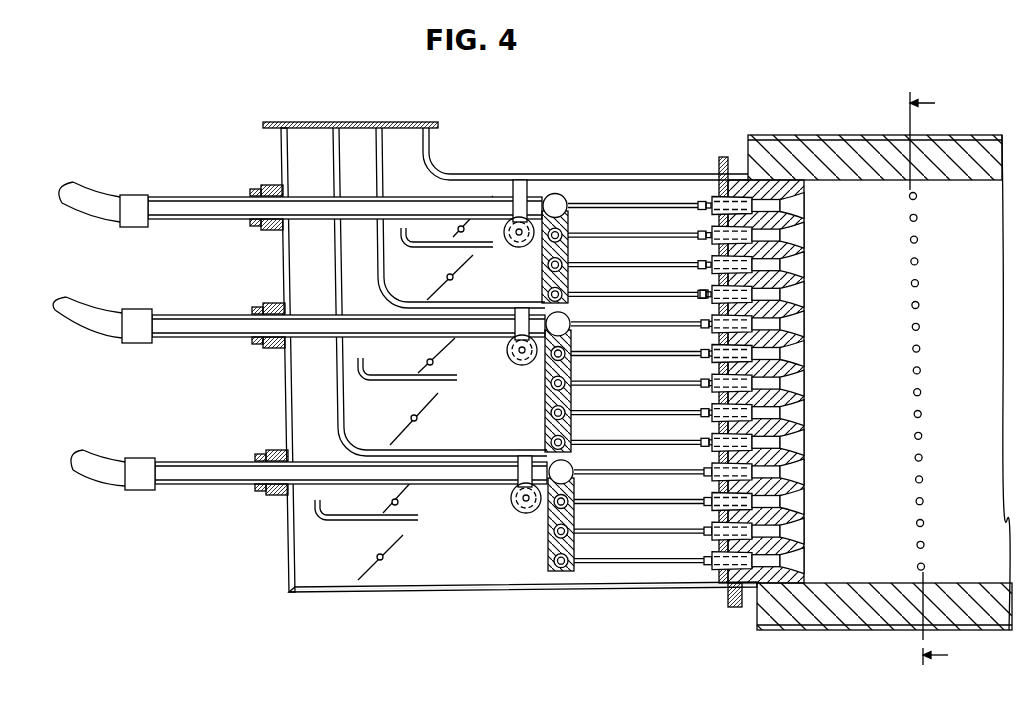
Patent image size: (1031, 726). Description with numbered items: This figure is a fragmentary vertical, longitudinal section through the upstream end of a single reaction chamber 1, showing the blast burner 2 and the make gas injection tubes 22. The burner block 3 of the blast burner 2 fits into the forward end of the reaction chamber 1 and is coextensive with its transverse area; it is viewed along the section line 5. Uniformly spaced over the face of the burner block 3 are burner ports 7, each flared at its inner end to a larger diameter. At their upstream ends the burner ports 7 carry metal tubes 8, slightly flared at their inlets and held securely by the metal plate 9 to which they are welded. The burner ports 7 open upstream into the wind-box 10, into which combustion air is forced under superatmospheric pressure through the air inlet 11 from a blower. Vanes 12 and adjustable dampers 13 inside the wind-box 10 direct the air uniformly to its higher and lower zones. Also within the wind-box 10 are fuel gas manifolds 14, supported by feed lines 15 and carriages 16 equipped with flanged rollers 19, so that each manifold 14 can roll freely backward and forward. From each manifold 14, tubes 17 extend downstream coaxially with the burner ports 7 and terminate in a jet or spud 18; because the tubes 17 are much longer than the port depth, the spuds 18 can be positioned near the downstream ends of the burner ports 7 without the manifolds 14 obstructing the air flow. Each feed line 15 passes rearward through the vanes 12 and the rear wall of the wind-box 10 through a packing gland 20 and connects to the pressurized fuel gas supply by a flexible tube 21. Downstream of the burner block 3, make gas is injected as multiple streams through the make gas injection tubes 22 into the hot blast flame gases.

The reaction chamber 1 is at (850, 192).
The blast burner 2 is at (604, 588).
The burner block 3 is at (770, 578).
The section line 5- 5 is at (929, 380).
The burner port 7 is at (760, 203).
The metal tube 8 is at (712, 229).
The metal plate 9 is at (722, 188).
The wind-box 10 is at (477, 563).
The air inlet 11 is at (357, 122).
The vanes 12 is at (376, 142).
The adjustable dampers 13 is at (397, 545).
The fuel gas manifold 14 is at (542, 268).
The feed line 15 is at (452, 197).
The carriage 16 is at (512, 184).
The tube 17 is at (626, 209).
The jet or spud 18 is at (704, 290).
The flanged rollers 19 is at (518, 244).
The packing gland 20 is at (272, 188).
The flexible tube 21 is at (93, 220).
The make gas injection tubes 22 is at (918, 240).